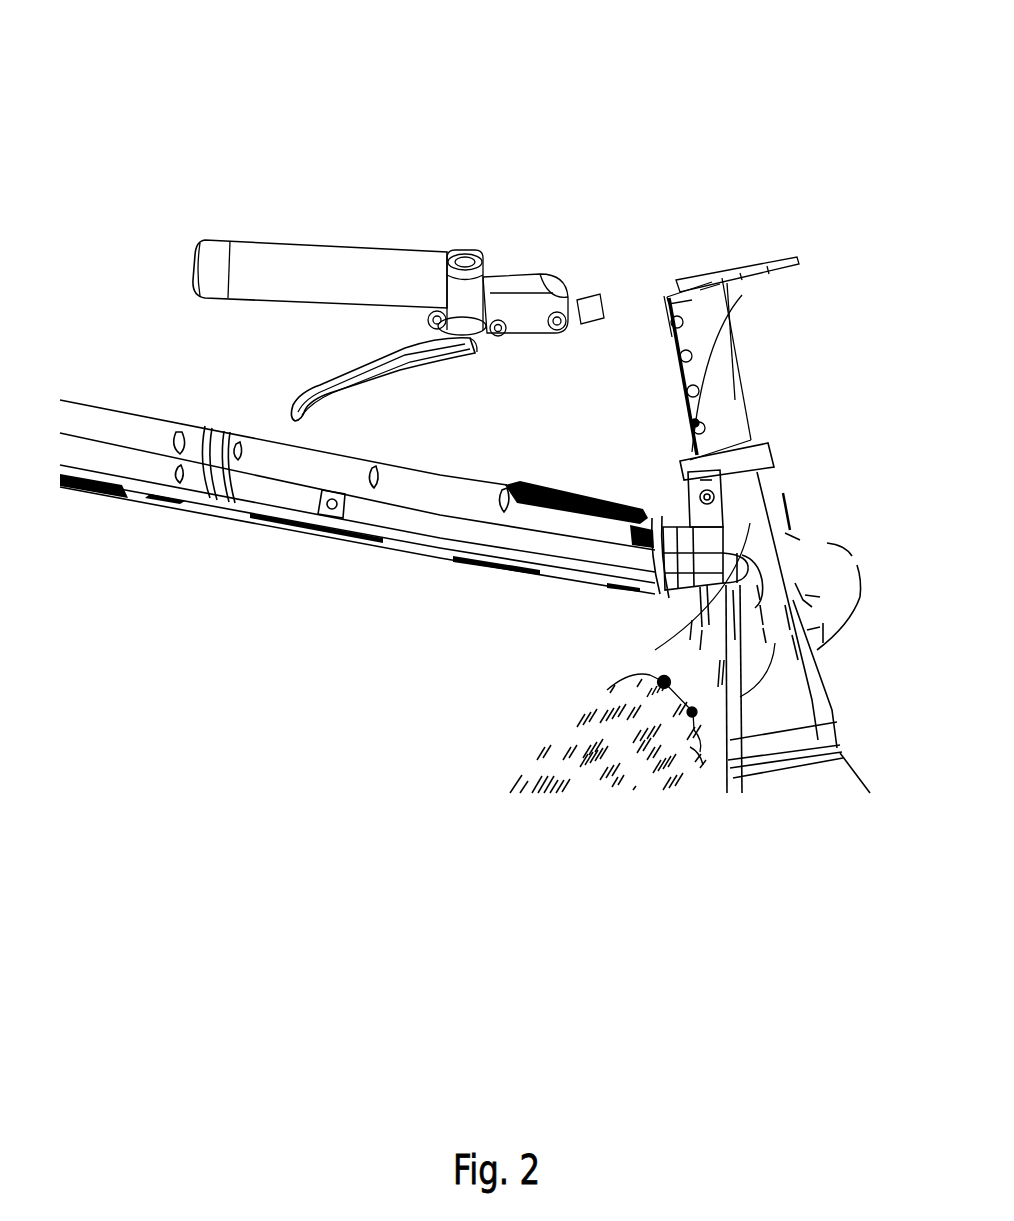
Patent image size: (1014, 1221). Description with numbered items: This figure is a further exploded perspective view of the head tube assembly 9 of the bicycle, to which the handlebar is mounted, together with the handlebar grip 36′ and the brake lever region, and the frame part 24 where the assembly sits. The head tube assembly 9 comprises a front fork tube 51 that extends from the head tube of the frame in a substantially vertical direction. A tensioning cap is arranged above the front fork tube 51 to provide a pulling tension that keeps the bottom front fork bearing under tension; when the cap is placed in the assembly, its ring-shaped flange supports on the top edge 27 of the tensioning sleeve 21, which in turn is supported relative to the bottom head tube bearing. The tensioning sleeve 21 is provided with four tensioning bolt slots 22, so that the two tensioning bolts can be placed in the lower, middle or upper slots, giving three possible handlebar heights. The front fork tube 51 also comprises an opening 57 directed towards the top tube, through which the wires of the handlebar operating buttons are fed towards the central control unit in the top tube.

The head tube assembly 9 is at (618, 252).
The handlebar grip 36′ is at (343, 270).
The head tube 24 is at (718, 275).
The top edge 27 is at (674, 290).
The tensioning sleeve 21 is at (740, 362).
The tensioning bolt slots 22 is at (674, 324).
The front fork tube 51 is at (695, 425).
The opening 57 is at (712, 612).